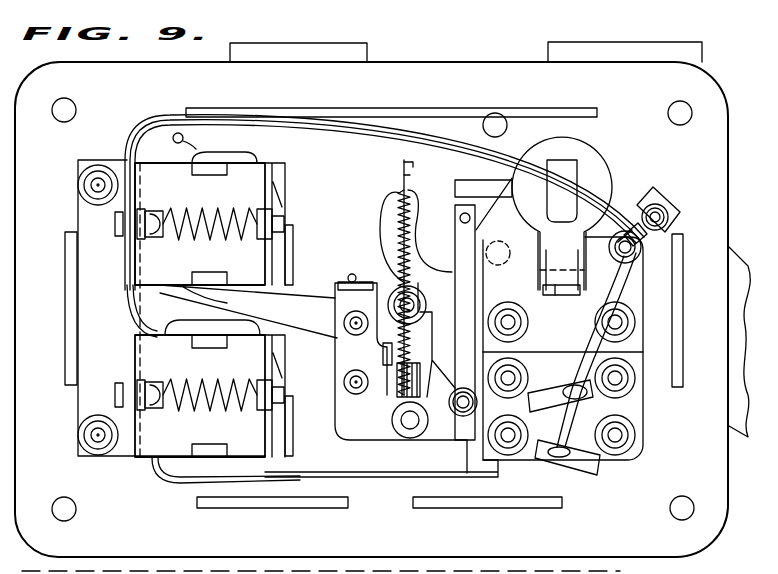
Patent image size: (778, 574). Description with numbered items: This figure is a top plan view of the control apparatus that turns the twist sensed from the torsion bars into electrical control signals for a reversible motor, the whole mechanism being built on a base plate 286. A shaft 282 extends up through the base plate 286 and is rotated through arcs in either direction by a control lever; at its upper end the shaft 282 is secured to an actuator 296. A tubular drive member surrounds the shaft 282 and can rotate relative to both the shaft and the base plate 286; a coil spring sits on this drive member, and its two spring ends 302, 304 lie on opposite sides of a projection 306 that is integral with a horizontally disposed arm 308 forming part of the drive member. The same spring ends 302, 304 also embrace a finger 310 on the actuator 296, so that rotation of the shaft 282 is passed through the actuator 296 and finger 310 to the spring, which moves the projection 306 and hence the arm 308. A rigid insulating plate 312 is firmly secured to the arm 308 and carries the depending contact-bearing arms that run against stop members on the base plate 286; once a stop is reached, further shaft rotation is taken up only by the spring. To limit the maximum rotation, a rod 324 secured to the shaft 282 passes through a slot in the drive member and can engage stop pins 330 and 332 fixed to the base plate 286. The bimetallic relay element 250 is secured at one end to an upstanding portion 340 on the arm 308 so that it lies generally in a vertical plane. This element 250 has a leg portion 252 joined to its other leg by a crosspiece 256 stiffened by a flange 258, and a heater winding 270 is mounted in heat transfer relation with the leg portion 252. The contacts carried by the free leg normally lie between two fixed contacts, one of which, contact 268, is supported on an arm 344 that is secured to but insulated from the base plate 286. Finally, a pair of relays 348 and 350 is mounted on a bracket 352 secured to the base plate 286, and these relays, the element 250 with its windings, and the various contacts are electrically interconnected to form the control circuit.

The relay (bimetallic element) 250 is at (392, 174).
The leg portion 252 is at (398, 400).
The crosspiece 256 is at (411, 176).
The flange 258 is at (424, 152).
The electrical contact 268 is at (367, 354).
The heater winding 270 is at (397, 243).
The shaft 282 is at (567, 162).
The base plate 286 is at (660, 522).
The actuator 296 is at (592, 165).
The spring end 302 is at (537, 286).
The spring end 304 is at (580, 291).
The projection 306 is at (543, 292).
The arm 308 is at (575, 344).
The finger 310 is at (559, 297).
The insulating plate 312 is at (620, 406).
The rod 324 is at (483, 183).
The stop pin 330 is at (483, 123).
The stop pin 332 is at (501, 243).
The upstanding portion 340 is at (452, 413).
The arm 344 is at (248, 311).
The relay 348 is at (222, 430).
The relay 350 is at (155, 173).
The bracket 352 is at (115, 326).